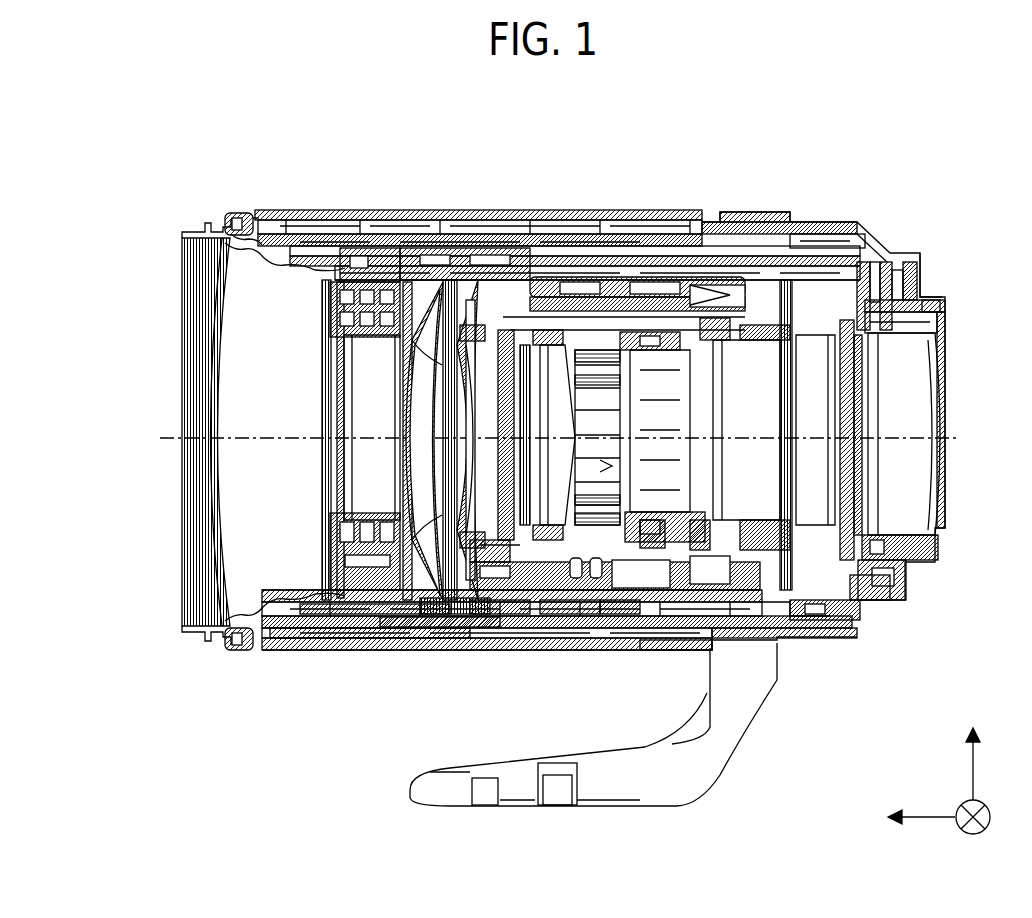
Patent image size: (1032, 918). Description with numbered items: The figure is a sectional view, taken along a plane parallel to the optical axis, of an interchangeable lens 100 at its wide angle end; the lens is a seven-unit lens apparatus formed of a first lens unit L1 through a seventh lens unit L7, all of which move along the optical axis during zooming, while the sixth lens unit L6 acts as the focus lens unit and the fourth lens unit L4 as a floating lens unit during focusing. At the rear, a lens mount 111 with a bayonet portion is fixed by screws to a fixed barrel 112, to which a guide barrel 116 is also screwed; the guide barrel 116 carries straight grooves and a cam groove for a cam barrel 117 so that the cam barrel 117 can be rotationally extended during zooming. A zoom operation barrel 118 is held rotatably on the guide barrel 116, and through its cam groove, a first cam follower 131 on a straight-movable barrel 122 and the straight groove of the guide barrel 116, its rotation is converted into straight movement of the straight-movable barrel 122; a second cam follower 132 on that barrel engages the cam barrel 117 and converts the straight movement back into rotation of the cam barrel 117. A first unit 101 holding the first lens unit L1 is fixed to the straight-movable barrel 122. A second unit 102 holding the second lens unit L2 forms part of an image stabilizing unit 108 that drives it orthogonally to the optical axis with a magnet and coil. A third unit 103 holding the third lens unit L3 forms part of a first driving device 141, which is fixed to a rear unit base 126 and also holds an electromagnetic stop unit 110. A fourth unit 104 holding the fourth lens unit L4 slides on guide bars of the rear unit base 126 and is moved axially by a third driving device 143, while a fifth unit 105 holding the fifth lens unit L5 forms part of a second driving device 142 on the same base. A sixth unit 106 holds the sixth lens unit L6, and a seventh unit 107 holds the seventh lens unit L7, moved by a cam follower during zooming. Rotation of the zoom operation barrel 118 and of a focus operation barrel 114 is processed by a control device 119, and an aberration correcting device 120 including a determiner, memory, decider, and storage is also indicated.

The interchangeable lens 100 is at (118, 179).
The first unit 101 is at (233, 214).
The second unit 102 is at (386, 360).
The third unit 103 is at (470, 337).
The fourth unit 104 is at (547, 347).
The fifth unit 105 is at (643, 347).
The sixth unit 106 is at (778, 350).
The seventh unit 107 is at (917, 333).
The image stabilizing unit 108 is at (349, 297).
The electromagnetic stop unit 110 is at (440, 293).
The lens mount 111 is at (927, 300).
The fixed barrel 112 is at (786, 227).
The focus operation barrel 114 is at (643, 658).
The guide barrel 116 is at (400, 600).
The cam barrel 117 is at (356, 600).
The zoom operation barrel 118 is at (310, 648).
The control device 119 is at (887, 603).
The aberration correcting device 120 is at (863, 580).
The straight-movable barrel 122 is at (488, 577).
The rear unit base 126 is at (563, 563).
The first cam follower 131 is at (612, 610).
The second cam follower 132 is at (603, 310).
The first driving device 141 is at (490, 547).
The second driving device 142 is at (650, 540).
The third driving device 143 is at (710, 287).
The first lens unit L1 is at (218, 339).
The second lens unit L2 is at (360, 376).
The third lens unit L3 is at (471, 384).
The fourth lens unit L4 is at (547, 418).
The fifth lens unit L5 is at (618, 433).
The sixth lens unit L6 is at (793, 410).
The seventh lens unit L7 is at (907, 467).